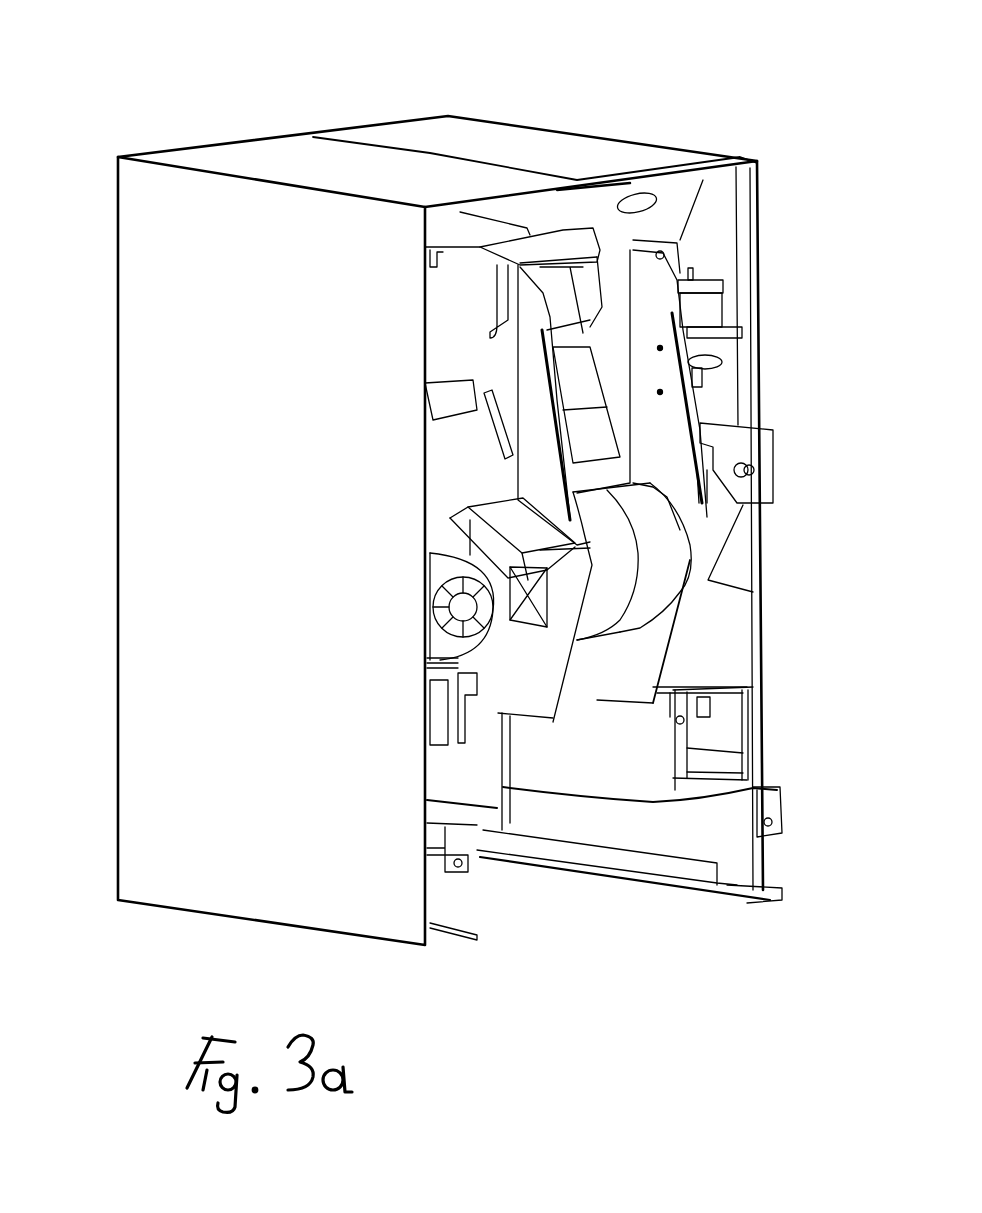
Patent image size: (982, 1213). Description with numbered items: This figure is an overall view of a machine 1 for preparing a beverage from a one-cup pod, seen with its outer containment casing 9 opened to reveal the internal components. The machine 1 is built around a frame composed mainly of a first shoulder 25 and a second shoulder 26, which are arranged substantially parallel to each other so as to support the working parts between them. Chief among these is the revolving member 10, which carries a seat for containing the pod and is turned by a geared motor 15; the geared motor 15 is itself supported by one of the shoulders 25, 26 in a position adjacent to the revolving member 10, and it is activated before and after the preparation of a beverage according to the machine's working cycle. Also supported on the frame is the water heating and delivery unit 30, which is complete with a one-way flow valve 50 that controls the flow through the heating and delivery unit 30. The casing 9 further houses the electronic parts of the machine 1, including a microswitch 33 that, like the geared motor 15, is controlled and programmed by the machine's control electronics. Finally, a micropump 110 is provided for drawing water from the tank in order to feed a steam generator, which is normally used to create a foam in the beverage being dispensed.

The machine 1 is at (163, 113).
The outer containment casing 9 is at (468, 137).
The revolving member 10 is at (663, 580).
The geared motor 15 is at (437, 613).
The first shoulder 25 is at (483, 795).
The second shoulder 26 is at (643, 780).
The water heating and delivery unit 30 is at (548, 402).
The microswitch 33 is at (425, 407).
The one-way flow valve 50 is at (557, 250).
The micropump 110 is at (727, 302).